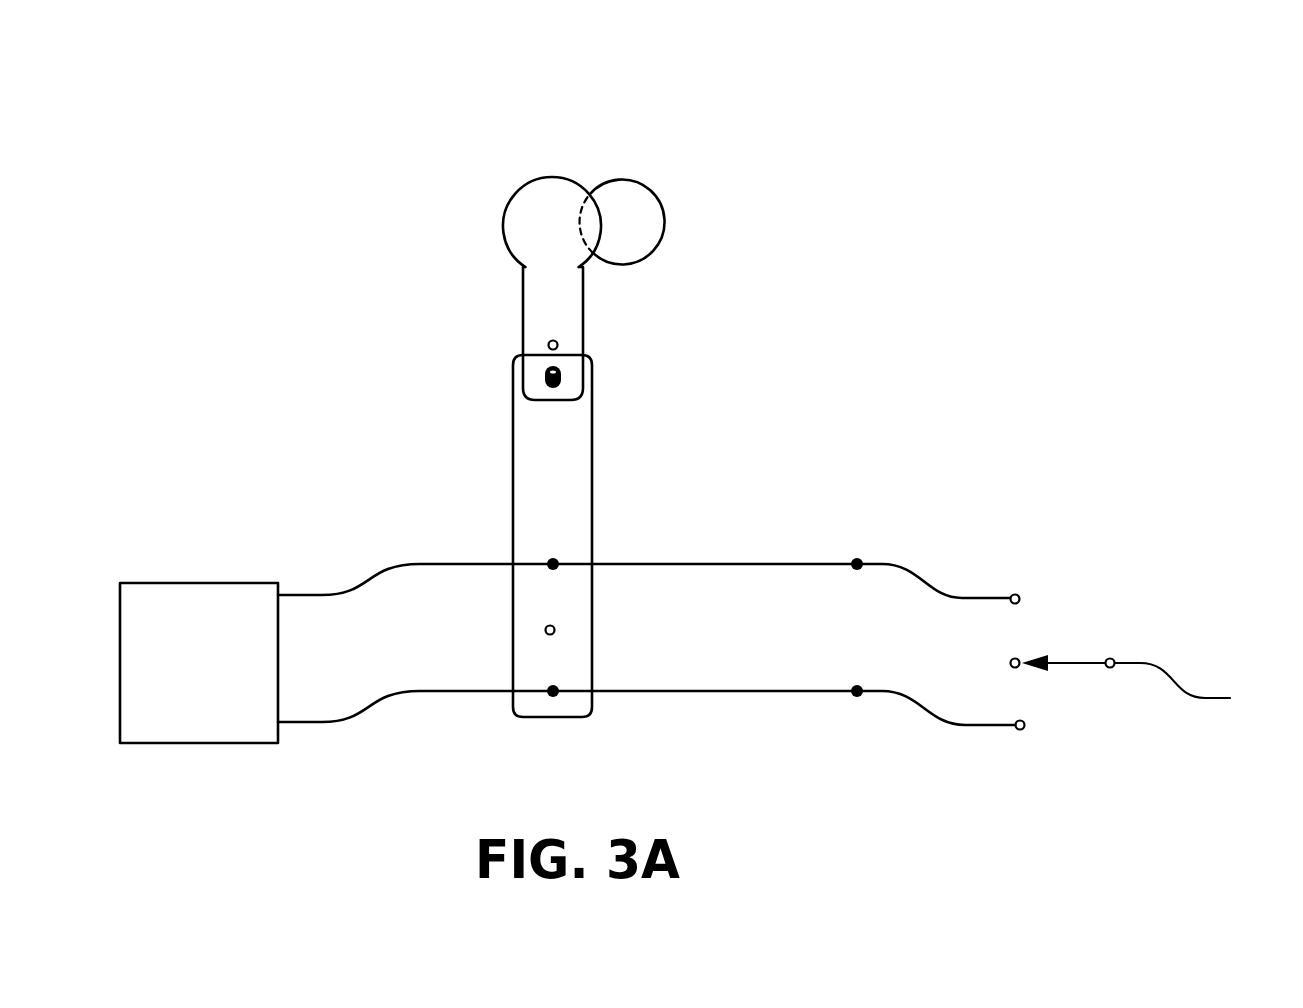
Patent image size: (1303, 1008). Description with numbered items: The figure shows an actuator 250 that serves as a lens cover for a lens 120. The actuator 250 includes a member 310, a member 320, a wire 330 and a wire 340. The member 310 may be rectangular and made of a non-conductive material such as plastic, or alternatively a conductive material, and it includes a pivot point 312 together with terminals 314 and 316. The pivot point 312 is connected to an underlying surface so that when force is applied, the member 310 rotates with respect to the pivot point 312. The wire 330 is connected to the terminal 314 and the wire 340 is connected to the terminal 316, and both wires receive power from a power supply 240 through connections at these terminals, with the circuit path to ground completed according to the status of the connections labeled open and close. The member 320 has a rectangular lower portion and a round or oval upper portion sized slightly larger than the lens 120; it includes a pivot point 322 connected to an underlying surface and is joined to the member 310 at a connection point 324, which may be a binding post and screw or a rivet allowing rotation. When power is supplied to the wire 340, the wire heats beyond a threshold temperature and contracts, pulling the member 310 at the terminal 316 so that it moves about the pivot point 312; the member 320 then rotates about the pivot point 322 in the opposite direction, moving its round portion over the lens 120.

The actuator 250 is at (345, 88).
The lens 120 is at (660, 222).
The member 320 is at (537, 302).
The pivot point 322 is at (543, 346).
The connection point 324 is at (563, 378).
The member 310 is at (525, 477).
The power supply 240 is at (199, 663).
The wire 330 is at (673, 559).
The wire 340 is at (682, 686).
The terminal 314 is at (546, 560).
The pivot point 312 is at (541, 629).
The terminal 316 is at (549, 694).